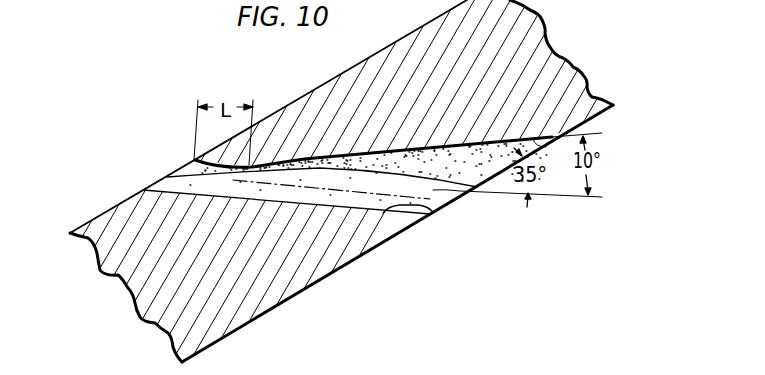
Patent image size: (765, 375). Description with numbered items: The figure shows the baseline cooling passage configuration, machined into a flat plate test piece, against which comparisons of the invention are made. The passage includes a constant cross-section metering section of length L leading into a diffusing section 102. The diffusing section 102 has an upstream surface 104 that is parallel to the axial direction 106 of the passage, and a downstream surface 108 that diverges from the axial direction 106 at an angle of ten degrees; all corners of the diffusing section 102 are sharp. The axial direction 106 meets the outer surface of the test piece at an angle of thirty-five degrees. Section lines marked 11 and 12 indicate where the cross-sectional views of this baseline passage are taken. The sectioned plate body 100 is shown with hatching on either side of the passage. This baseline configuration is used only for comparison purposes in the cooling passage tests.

The blade 100 is at (207, 171).
The reference line / cutting edge plane 102 is at (468, 193).
The cutting edge segment 104 is at (417, 209).
The groove bottom 106 is at (162, 176).
The cutting edge corner 108 is at (538, 144).
The section line 12- 12 is at (148, 208).
The section line 11- 11 is at (640, 118).